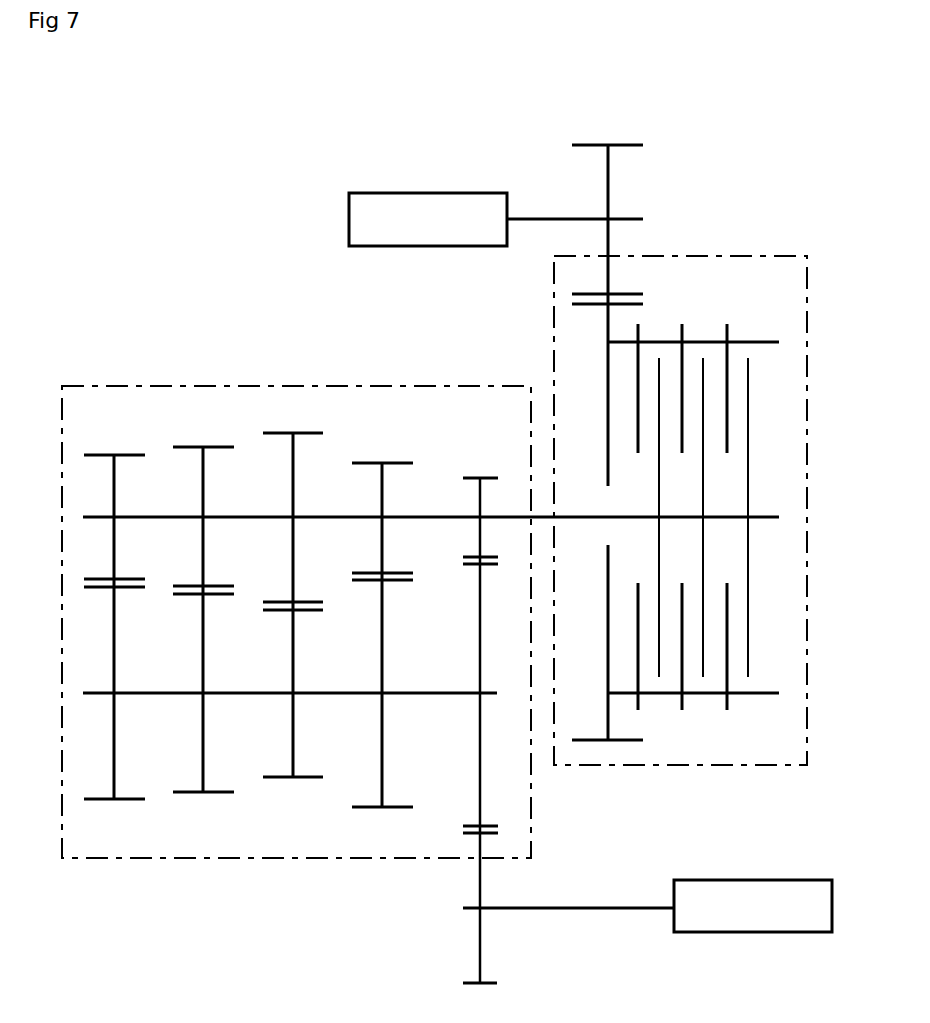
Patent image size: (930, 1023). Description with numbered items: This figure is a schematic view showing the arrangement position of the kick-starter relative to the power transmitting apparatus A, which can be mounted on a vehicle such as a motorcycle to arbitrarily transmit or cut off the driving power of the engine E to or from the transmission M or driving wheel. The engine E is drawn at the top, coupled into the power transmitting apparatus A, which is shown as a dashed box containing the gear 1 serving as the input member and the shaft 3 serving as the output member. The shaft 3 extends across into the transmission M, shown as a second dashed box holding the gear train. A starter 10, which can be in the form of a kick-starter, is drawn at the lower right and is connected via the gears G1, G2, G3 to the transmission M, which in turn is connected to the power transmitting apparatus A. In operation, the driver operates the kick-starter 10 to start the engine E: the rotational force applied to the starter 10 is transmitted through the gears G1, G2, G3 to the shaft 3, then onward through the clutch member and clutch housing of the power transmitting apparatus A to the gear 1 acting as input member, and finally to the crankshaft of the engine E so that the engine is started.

The shaft 3 is at (140, 517).
The gear 1 is at (633, 744).
The starter 10 is at (730, 933).
The engine E is at (421, 193).
The power transmitting apparatus A is at (753, 256).
The transmission M is at (241, 387).
The gear G1 is at (479, 940).
The gear G2 is at (480, 805).
The gear G3 is at (480, 503).